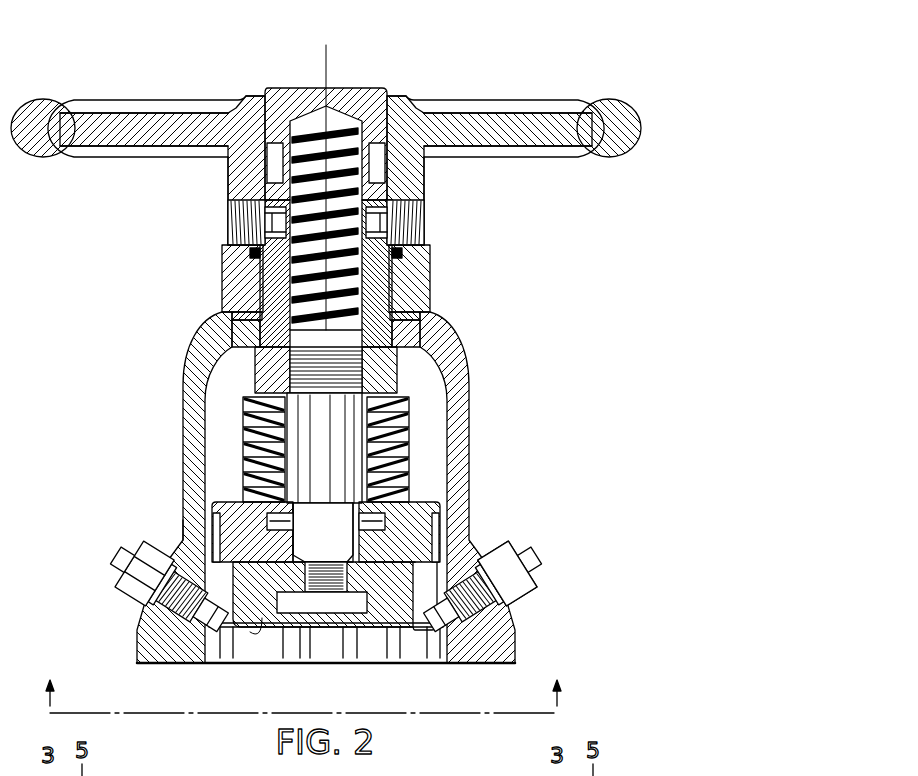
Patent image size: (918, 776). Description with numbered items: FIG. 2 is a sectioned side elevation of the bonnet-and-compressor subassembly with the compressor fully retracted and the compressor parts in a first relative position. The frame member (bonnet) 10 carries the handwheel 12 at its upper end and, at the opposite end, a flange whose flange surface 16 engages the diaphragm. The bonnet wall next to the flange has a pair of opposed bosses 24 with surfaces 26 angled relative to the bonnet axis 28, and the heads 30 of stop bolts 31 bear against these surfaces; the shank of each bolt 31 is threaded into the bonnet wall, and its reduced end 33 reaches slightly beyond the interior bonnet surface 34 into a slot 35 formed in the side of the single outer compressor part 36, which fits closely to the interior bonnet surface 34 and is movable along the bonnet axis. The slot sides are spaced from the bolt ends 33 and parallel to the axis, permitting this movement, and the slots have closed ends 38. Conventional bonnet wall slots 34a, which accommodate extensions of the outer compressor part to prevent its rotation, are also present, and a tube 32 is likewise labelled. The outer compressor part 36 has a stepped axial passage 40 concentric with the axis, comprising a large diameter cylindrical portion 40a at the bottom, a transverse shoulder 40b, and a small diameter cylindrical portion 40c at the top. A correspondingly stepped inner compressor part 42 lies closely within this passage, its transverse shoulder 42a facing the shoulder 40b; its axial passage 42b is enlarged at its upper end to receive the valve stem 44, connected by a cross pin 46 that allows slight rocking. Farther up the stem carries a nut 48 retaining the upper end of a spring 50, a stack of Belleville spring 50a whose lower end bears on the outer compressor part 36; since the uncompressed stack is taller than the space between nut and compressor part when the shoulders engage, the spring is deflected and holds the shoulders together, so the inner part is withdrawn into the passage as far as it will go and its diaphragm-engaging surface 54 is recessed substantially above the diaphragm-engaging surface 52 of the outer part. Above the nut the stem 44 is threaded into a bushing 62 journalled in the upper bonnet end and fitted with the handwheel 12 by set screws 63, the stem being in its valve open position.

The frame member (bonnet) 10 is at (336, 487).
The handwheel 12 is at (542, 160).
The flange surface 16 is at (326, 662).
The bosses 24 is at (170, 616).
The surfaces 26 is at (188, 552).
The bonnet axis 28 is at (333, 73).
The heads 30 is at (146, 580).
The stop bolts 31 is at (520, 535).
The tube 32 is at (123, 593).
The reduced end 33 is at (146, 636).
The interior bonnet surface 34 is at (449, 455).
The conventional bonnet wall slots 34a is at (313, 648).
The slot 35 is at (151, 547).
The outer compressor part 36 is at (400, 523).
The closed ends 38 is at (216, 545).
The stepped axial passage 40 is at (226, 648).
The large diameter cylindrical portion 40a is at (258, 618).
The transverse shoulder 40b is at (247, 641).
The small diameter cylindrical portion 40c is at (400, 641).
The inner compressor part 42 is at (380, 641).
The transverse shoulder 42a is at (412, 560).
The axial passage 42b is at (293, 641).
The valve stem 44 is at (352, 412).
The cross pin 46 is at (268, 520).
The nut 48 is at (375, 372).
The spring 50 is at (454, 404).
The Belleville spring 50a is at (247, 428).
The diaphragm-engaging surface 52 is at (434, 652).
The diaphragm-engaging surface 54 is at (345, 637).
The bushing 62 is at (372, 289).
The set screws 63 is at (232, 218).